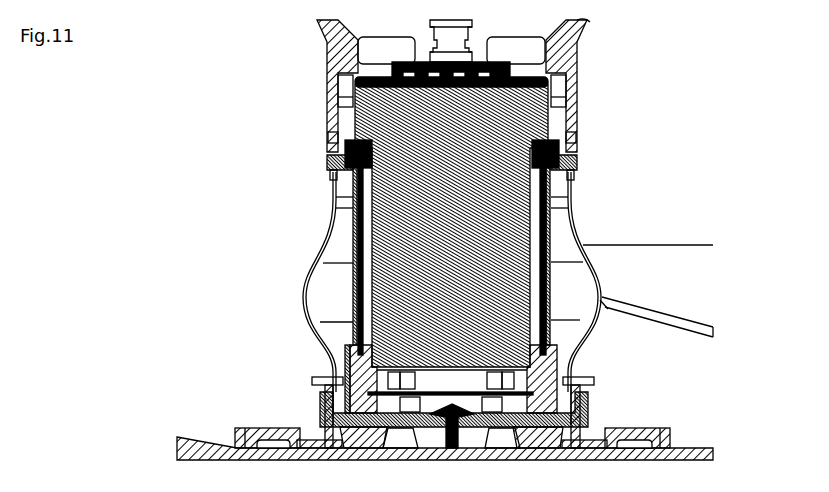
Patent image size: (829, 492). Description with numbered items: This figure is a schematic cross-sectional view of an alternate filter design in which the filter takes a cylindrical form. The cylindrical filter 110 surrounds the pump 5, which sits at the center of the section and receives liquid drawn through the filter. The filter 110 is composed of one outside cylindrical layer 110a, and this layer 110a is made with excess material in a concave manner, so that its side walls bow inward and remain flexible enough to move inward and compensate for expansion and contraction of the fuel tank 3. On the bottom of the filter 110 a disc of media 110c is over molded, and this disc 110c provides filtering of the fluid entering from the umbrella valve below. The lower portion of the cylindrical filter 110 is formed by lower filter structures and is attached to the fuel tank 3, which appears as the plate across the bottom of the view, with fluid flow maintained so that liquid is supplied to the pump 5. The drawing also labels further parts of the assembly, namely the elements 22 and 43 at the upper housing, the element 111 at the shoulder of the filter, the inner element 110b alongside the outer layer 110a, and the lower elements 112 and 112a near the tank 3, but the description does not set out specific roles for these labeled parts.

The upper housing wall 22 is at (340, 68).
The upper housing wall 43 is at (573, 123).
The flange 111 is at (333, 150).
The pump 5 is at (468, 183).
The cylindrical filter 110 is at (385, 295).
The outside cylindrical layer 110a is at (353, 245).
The inner wall 110b is at (353, 307).
The disc of media 110c is at (345, 348).
The lower housing member 112 is at (540, 427).
The side member 112a is at (553, 355).
The fuel tank 3 is at (177, 437).